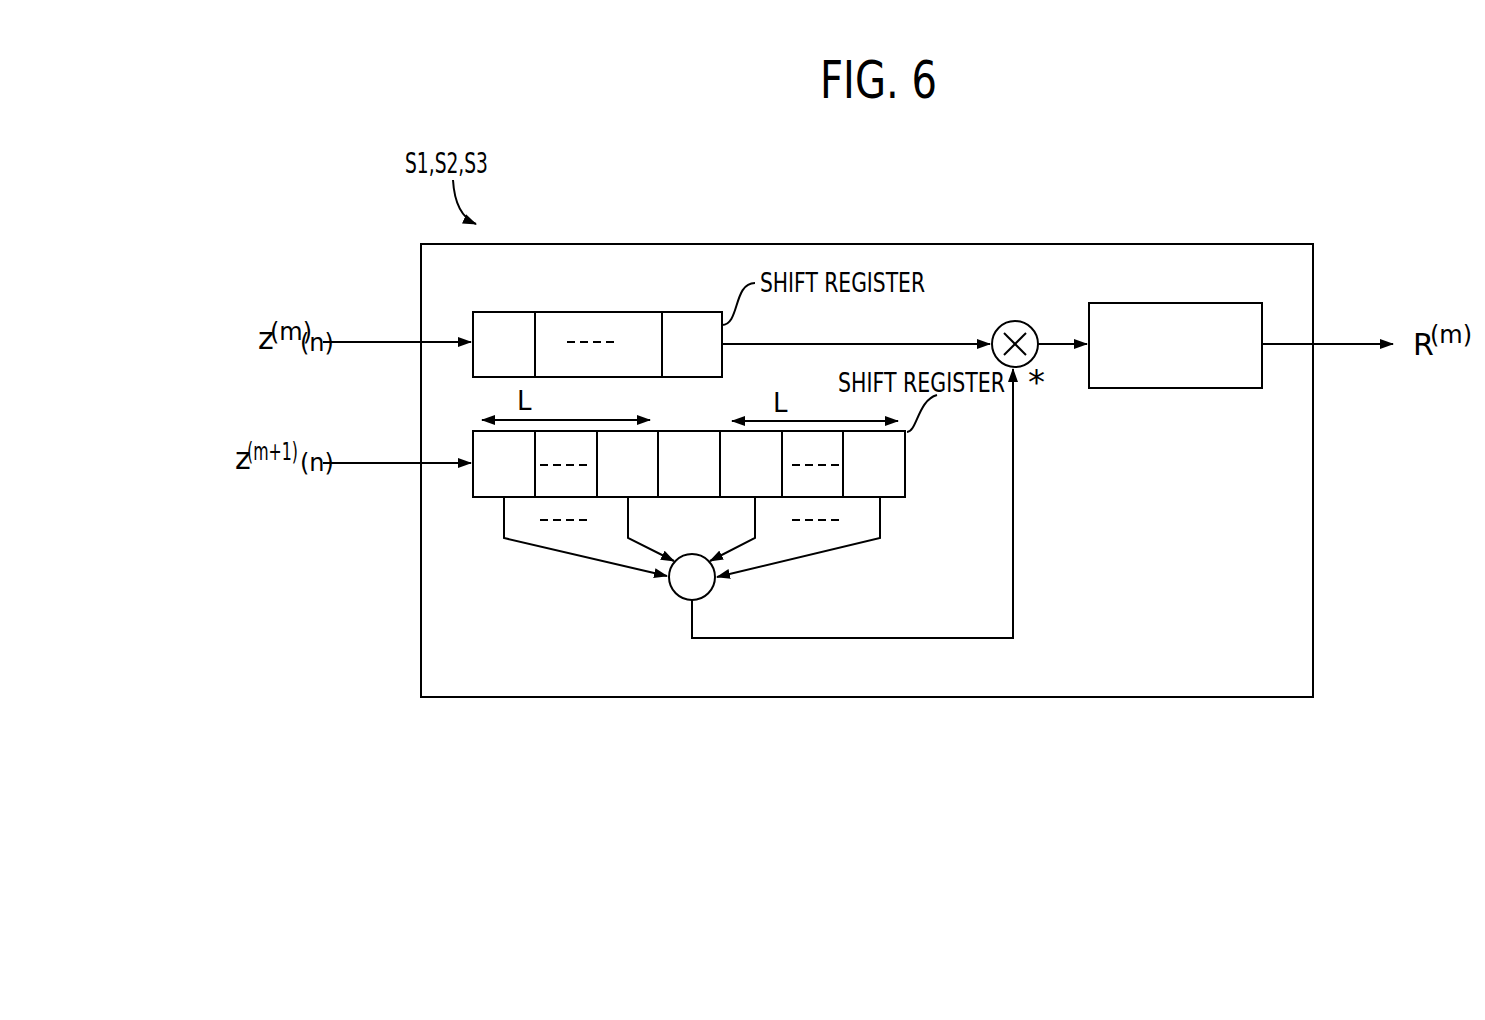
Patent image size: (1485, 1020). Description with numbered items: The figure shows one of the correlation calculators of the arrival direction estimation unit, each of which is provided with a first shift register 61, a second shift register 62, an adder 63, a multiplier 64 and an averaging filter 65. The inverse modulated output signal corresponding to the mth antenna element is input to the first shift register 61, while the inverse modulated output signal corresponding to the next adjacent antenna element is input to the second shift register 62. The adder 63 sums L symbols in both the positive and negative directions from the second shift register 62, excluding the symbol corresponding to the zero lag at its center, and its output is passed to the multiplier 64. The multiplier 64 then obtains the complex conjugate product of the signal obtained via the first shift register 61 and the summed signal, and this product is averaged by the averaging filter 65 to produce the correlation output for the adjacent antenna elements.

The first shift register 61 is at (597, 325).
The second shift register 62 is at (704, 464).
The adder 63 is at (679, 586).
The multiplier 64 is at (1014, 330).
The averaging filter 65 is at (1175, 328).